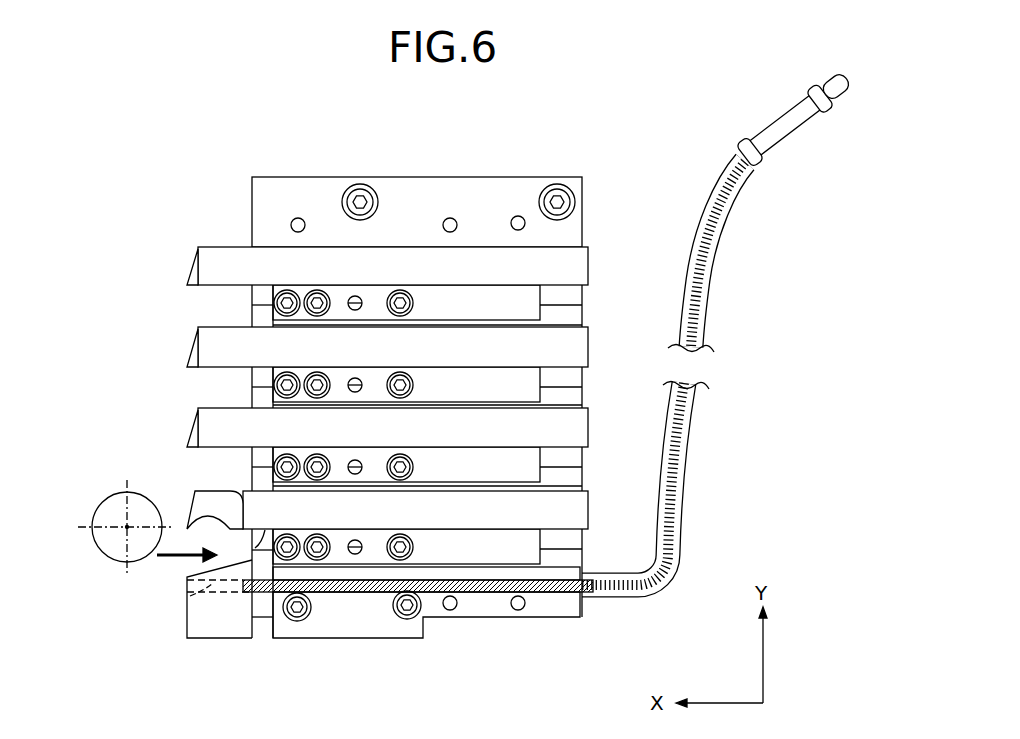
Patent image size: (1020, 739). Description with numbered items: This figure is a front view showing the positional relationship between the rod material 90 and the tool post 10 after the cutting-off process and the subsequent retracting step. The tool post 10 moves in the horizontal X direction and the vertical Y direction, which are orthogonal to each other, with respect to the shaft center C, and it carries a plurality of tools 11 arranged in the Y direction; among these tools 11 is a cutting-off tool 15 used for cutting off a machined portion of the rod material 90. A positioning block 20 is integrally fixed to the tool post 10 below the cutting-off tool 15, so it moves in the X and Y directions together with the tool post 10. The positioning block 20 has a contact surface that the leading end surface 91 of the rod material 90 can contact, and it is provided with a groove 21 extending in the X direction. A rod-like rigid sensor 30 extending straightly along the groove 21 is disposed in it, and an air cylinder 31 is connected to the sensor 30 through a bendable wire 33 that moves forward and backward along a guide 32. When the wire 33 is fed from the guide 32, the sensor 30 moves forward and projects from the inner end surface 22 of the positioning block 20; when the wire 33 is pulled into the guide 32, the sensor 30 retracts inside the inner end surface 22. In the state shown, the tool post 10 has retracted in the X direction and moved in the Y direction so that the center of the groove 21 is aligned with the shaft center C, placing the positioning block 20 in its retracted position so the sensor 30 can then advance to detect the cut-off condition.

The tool post 10 is at (486, 203).
The tools 11 is at (210, 270).
The cutting-off tool 15 is at (220, 508).
The positioning block 20 is at (242, 620).
The groove 21 is at (187, 595).
The inner end surface 22 is at (187, 613).
The sensor 30 is at (323, 597).
The air cylinder 31 is at (762, 126).
The guide 32 is at (697, 238).
The wire 33 is at (706, 297).
The rod material 90 is at (110, 493).
The leading end surface 91 is at (108, 515).
The shaft center C is at (123, 530).